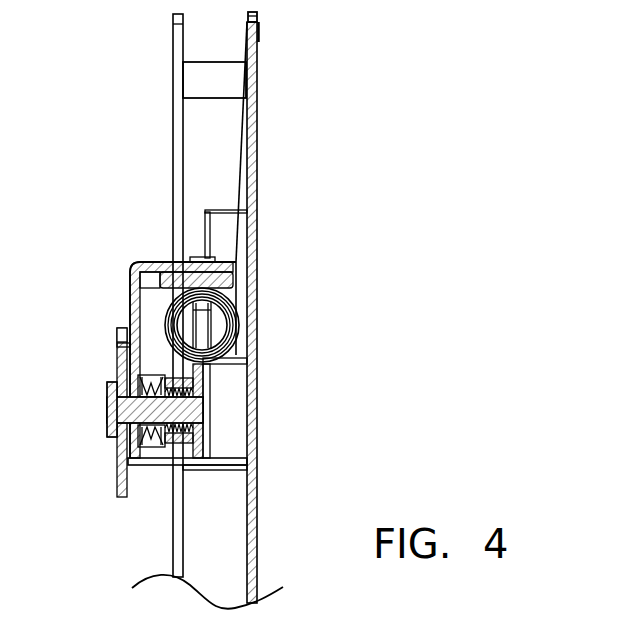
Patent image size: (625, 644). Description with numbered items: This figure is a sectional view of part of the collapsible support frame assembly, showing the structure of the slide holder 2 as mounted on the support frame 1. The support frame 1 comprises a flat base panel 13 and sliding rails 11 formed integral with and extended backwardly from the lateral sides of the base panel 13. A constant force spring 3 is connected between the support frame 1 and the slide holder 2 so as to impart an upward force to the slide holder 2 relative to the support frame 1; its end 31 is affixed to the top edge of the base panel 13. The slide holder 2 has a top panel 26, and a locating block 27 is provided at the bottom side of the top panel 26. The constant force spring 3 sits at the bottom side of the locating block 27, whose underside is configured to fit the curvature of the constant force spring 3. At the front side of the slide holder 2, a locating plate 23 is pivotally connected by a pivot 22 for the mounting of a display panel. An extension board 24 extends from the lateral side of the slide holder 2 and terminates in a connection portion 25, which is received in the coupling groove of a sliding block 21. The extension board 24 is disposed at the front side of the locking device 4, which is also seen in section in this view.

The support frame 1 is at (173, 70).
The sliding rail 11 is at (213, 135).
The base panel 13 is at (252, 143).
The end of constant force spring 31 is at (257, 18).
The locking device 4 is at (205, 225).
The slide holder 2 is at (130, 310).
The top panel 26 is at (162, 261).
The locating block 27 is at (225, 283).
The constant force spring 3 is at (235, 335).
The extension board 24 is at (197, 368).
The locating plate 23 is at (120, 445).
The connection portion 25 is at (207, 432).
The pivot 22 is at (118, 408).
The sliding block 21 is at (213, 466).